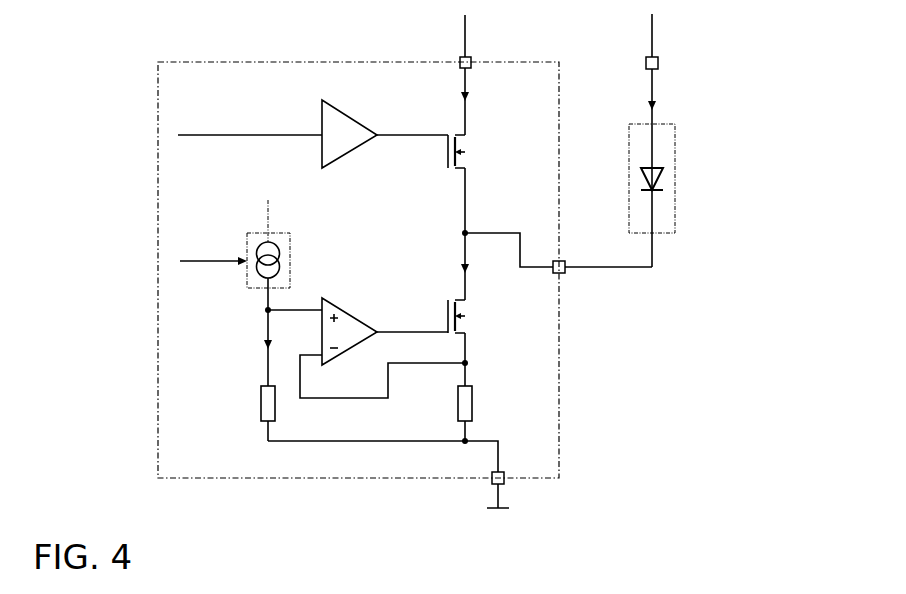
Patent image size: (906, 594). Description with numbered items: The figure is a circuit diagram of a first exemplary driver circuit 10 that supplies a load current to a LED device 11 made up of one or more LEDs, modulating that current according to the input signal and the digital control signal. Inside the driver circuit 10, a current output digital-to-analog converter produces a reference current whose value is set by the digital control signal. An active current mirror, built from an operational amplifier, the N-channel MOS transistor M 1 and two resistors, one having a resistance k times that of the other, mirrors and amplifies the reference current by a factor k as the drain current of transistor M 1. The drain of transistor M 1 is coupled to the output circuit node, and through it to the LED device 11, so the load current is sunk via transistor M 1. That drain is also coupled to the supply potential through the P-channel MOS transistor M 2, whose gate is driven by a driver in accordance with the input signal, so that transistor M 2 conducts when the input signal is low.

The driver circuit 10 is at (379, 261).
The LED device 11 is at (678, 140).
The transistor M1 1 is at (472, 324).
The transistor M2 2 is at (472, 165).